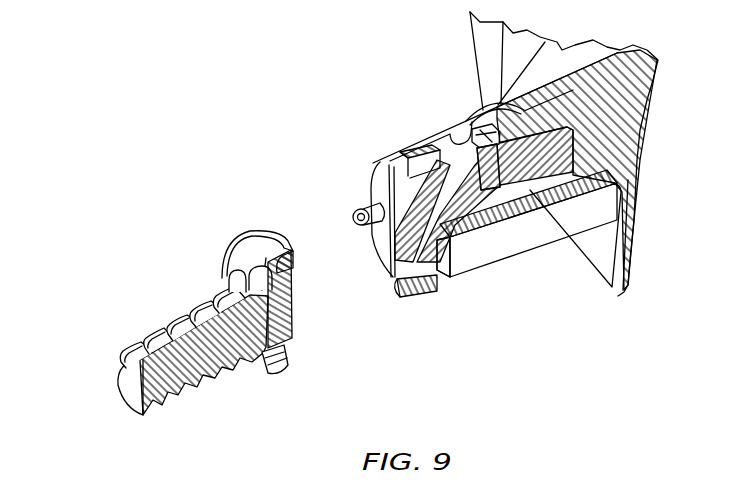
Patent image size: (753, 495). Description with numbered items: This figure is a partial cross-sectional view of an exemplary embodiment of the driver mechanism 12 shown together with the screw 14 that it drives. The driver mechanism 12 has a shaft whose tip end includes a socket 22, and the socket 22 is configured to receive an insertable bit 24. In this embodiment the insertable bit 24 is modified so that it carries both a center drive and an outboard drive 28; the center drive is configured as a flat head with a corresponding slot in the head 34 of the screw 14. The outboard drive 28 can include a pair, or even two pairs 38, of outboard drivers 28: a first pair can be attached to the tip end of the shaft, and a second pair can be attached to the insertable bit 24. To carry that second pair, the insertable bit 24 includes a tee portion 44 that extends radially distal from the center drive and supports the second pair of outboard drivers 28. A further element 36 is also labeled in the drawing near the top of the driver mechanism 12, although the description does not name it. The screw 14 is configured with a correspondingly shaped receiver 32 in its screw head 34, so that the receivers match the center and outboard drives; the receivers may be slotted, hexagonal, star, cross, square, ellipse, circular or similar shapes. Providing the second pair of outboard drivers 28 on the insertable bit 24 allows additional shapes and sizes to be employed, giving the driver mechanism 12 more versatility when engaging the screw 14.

The driver mechanism 12 is at (599, 305).
The screw 14 is at (118, 318).
The socket 22 is at (522, 196).
The insertable bit 24 is at (463, 203).
The outboard drive 28 is at (366, 210).
The receiver 32 is at (230, 282).
The screw head 34 is at (240, 234).
The set screw 36 is at (472, 120).
The two pairs of drivers 38 is at (376, 136).
The tee portion 44 is at (432, 292).